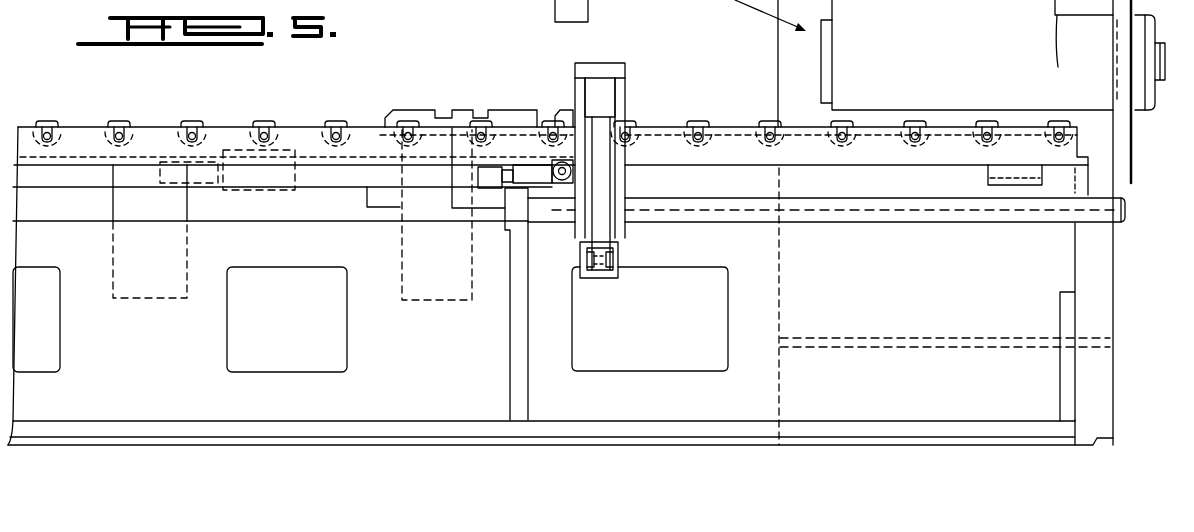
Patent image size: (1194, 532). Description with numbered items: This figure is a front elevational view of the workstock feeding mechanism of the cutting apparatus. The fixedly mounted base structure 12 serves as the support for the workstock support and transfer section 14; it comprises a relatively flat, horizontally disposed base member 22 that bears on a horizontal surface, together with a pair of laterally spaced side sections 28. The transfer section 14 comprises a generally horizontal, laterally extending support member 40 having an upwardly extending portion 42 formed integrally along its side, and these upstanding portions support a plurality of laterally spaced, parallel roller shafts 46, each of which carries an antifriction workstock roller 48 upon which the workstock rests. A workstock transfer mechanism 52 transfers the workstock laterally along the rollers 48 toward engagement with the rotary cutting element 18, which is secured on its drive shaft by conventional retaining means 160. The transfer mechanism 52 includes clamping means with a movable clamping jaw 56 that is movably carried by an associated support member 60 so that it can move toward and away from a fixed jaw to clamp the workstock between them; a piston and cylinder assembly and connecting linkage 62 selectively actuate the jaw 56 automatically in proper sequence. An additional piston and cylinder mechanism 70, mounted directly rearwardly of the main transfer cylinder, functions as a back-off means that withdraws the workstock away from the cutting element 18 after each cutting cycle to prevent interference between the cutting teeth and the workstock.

The base structure 12 is at (655, 460).
The workstock support and transfer section 14 is at (437, 92).
The rotary cutting element 18 is at (1138, 178).
The base member 22 is at (998, 427).
The side sections 28 is at (1093, 310).
The support member 40 is at (45, 167).
The upwardly extending portion 42 is at (88, 121).
The roller shafts 46 is at (120, 130).
The workstock rollers 48 is at (200, 108).
The workstock transfer mechanism 52 is at (640, 238).
The clamping jaw 56 is at (595, 88).
The support member 60 is at (625, 97).
The connecting linkage 62 is at (602, 230).
The piston and cylinder mechanism 70 is at (252, 198).
The retaining means 160 is at (1137, 33).